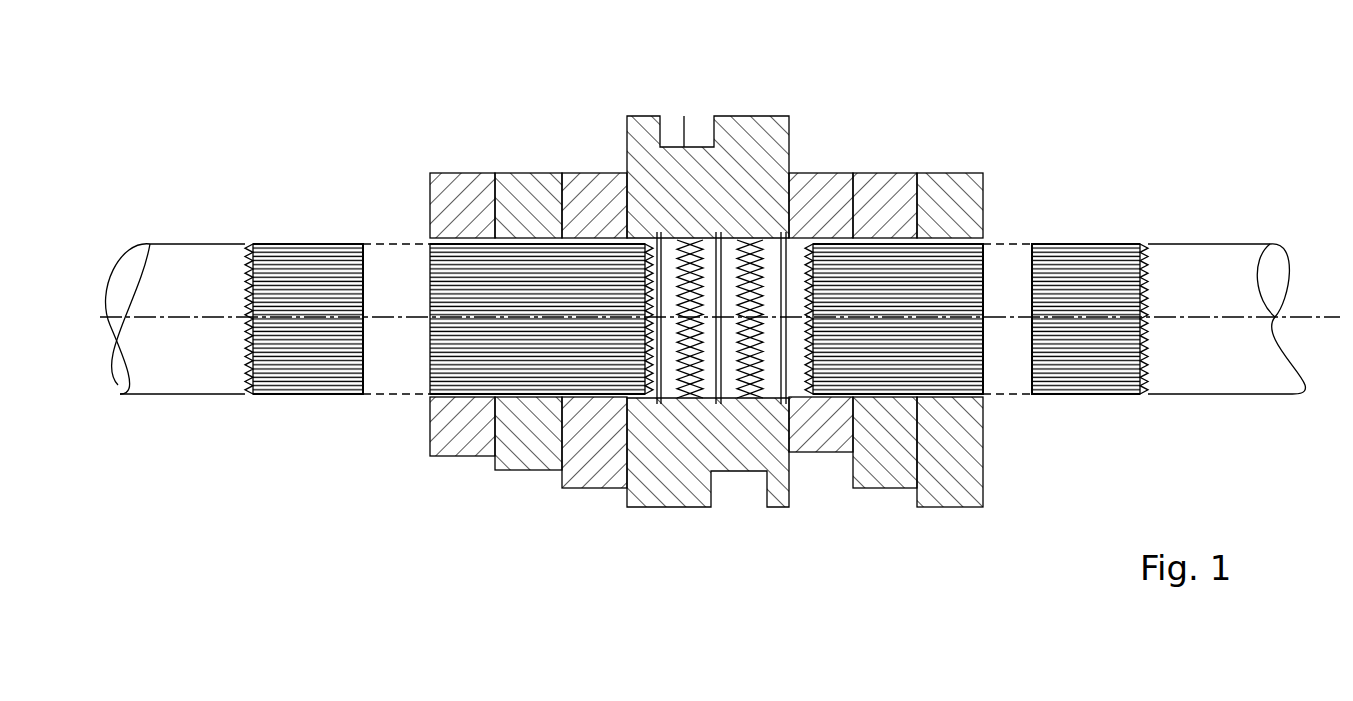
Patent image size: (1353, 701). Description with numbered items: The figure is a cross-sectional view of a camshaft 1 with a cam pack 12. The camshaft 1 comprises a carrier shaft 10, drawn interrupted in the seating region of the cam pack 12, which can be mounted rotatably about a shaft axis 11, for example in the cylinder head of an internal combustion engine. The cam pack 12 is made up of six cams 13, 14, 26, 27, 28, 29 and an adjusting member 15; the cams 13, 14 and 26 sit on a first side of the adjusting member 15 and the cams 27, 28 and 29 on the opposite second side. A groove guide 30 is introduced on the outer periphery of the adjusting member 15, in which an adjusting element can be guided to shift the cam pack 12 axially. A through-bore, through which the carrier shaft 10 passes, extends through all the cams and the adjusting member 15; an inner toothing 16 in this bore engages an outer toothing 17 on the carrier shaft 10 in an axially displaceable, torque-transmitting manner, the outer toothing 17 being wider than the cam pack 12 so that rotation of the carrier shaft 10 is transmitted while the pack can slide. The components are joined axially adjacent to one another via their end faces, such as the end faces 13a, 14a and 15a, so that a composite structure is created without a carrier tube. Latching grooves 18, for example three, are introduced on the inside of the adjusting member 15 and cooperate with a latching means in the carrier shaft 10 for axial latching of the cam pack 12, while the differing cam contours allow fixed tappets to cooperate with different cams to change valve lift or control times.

The camshaft 1 is at (322, 176).
The carrier shaft 10 is at (172, 400).
The shaft axis 11 is at (1308, 300).
The cam pack 12 is at (671, 562).
The cam 13 is at (463, 458).
The end face 13a is at (500, 215).
The cam 14 is at (535, 471).
The end face 14a is at (487, 205).
The adjusting member 15 is at (758, 115).
The end face 15a is at (620, 220).
The inner toothing 16 is at (975, 283).
The outer toothing 17 is at (1080, 248).
The latching groove 18 is at (803, 232).
The cam 26 is at (597, 489).
The cam 27 is at (828, 453).
The cam 28 is at (890, 489).
The cam 29 is at (960, 508).
The groove guide 30 is at (690, 138).